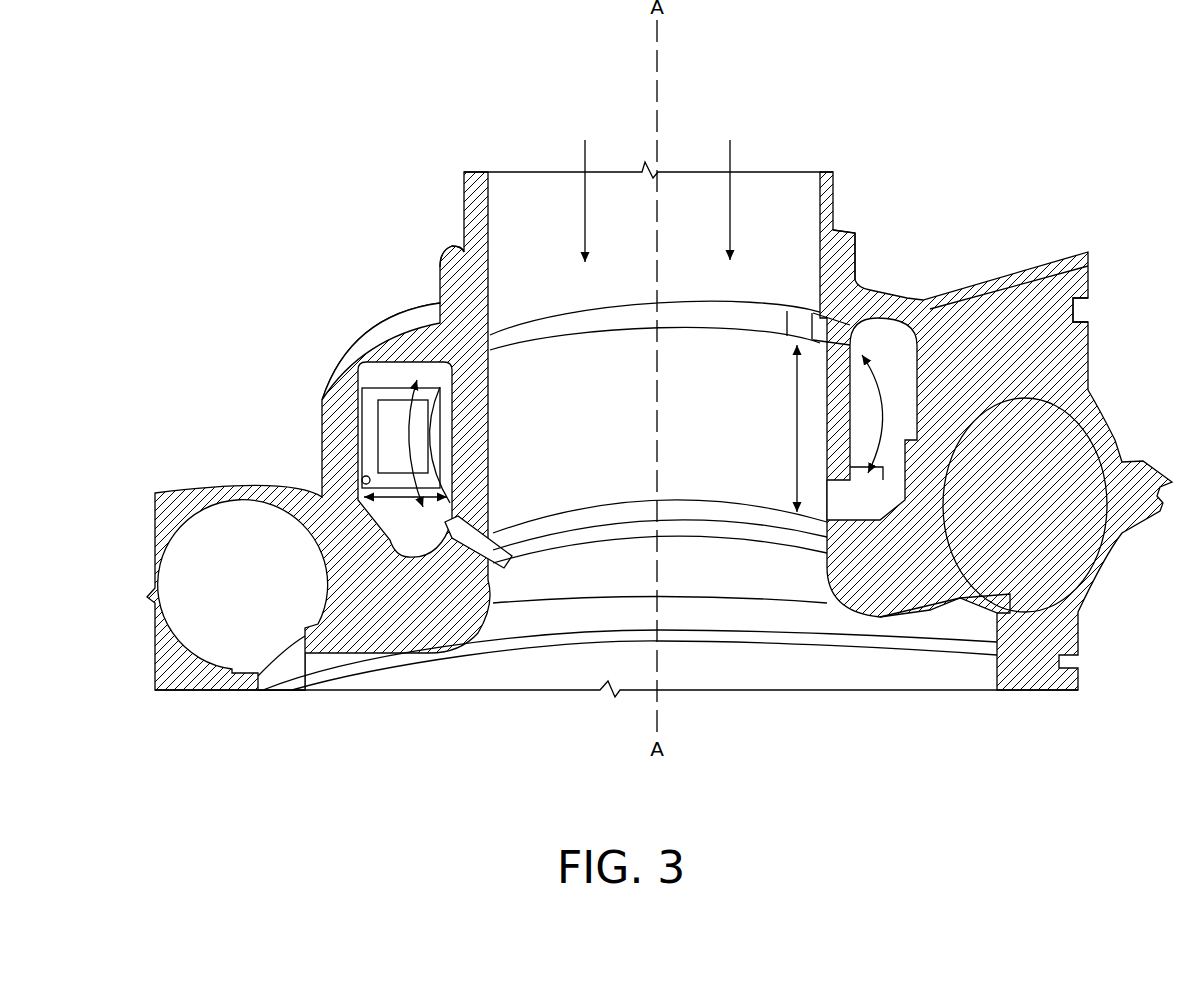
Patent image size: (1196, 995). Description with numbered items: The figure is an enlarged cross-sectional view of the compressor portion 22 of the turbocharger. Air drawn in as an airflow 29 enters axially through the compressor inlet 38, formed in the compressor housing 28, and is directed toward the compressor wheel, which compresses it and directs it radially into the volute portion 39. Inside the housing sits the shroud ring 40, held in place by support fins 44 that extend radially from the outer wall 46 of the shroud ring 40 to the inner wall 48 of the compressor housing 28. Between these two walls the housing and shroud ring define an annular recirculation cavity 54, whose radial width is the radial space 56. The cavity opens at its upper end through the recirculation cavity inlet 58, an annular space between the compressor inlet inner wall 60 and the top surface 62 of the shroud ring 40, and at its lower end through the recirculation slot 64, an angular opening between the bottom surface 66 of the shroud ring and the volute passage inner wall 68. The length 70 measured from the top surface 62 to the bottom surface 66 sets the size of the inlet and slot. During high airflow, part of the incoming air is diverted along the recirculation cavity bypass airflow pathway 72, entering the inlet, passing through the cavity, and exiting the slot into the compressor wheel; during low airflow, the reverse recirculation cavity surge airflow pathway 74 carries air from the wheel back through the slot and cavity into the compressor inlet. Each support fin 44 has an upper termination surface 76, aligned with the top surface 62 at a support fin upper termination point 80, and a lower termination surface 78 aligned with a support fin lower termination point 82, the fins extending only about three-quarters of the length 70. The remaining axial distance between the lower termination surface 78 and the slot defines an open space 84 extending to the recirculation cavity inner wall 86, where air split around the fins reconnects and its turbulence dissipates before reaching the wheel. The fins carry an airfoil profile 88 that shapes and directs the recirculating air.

The compressor portion 22 is at (365, 100).
The compressor housing 28 is at (378, 340).
The airflow 29 is at (583, 196).
The compressor inlet 38 is at (515, 203).
The volute portion 39 is at (1030, 545).
The shroud ring 40 is at (1075, 303).
The support fins 44 is at (387, 420).
The outer wall 46 is at (450, 447).
The inner wall 48 is at (912, 455).
The recirculation cavity 54 is at (945, 303).
The radial space 56 is at (383, 500).
The recirculation cavity inlet 58 is at (688, 313).
The compressor inlet inner wall 60 is at (858, 281).
The top surface 62 is at (458, 370).
The recirculation slot 64 is at (710, 510).
The bottom surface 66 is at (483, 590).
The volute passage inner wall 68 is at (877, 457).
The length 70 is at (792, 510).
The recirculation cavity bypass airflow pathway 72 is at (910, 455).
The recirculation cavity surge airflow pathway 74 is at (273, 512).
The upper termination surface 76 is at (907, 299).
The lower termination surface 78 is at (868, 440).
The support fin upper termination point 80 is at (392, 327).
The support fin lower termination point 82 is at (372, 477).
The open space 84 is at (908, 455).
The recirculation cavity inner wall 86 is at (430, 548).
The airfoil profile 88 is at (985, 298).